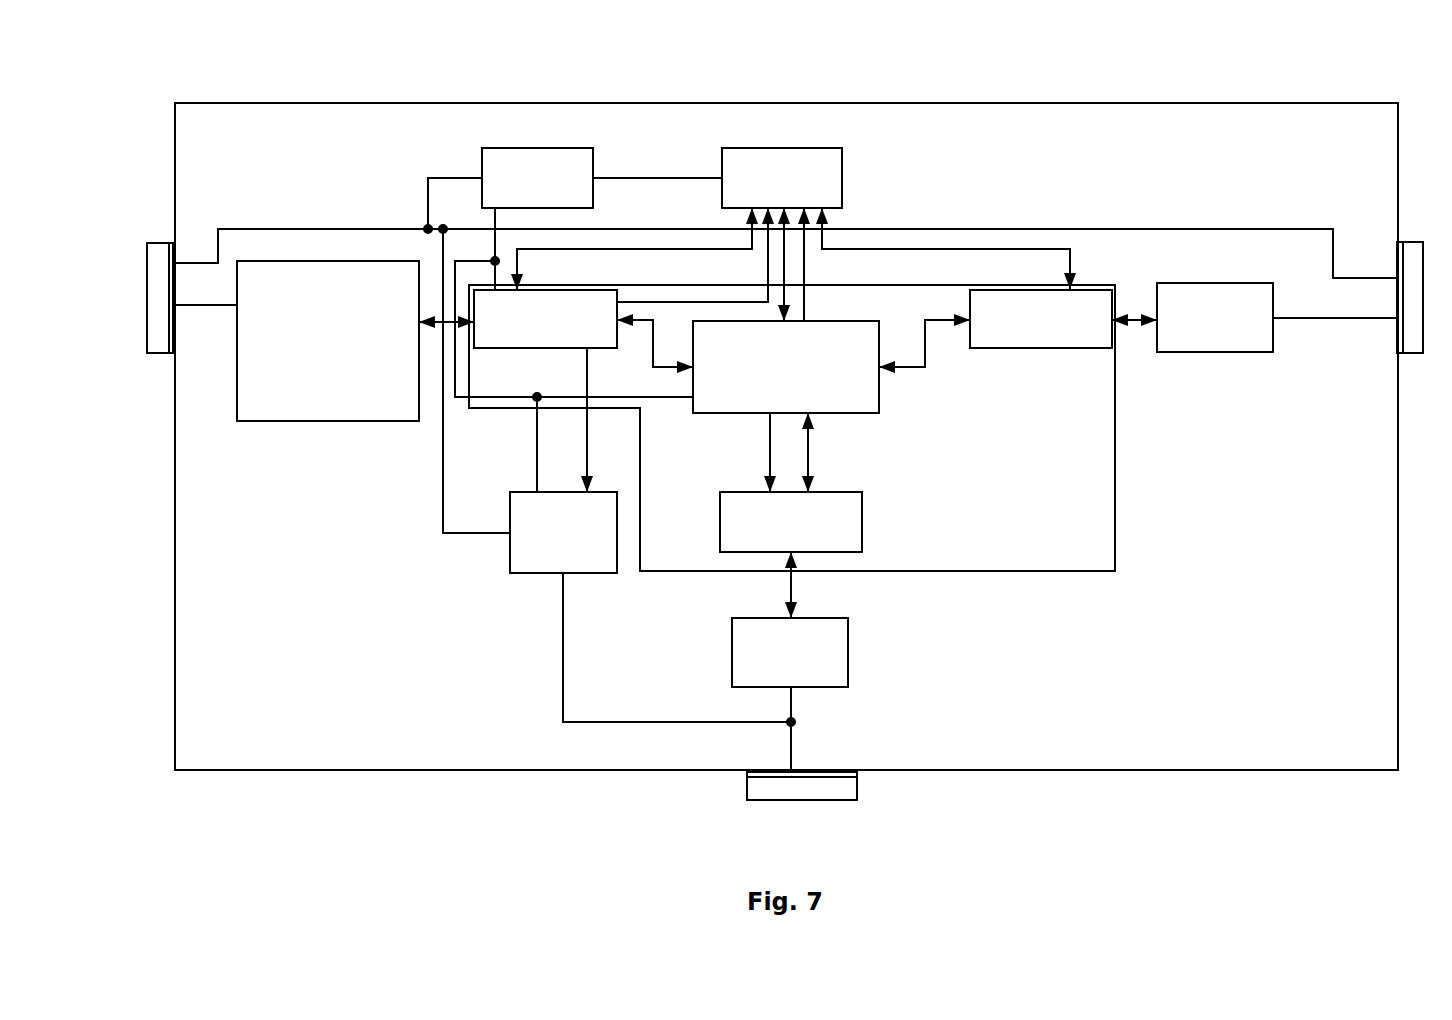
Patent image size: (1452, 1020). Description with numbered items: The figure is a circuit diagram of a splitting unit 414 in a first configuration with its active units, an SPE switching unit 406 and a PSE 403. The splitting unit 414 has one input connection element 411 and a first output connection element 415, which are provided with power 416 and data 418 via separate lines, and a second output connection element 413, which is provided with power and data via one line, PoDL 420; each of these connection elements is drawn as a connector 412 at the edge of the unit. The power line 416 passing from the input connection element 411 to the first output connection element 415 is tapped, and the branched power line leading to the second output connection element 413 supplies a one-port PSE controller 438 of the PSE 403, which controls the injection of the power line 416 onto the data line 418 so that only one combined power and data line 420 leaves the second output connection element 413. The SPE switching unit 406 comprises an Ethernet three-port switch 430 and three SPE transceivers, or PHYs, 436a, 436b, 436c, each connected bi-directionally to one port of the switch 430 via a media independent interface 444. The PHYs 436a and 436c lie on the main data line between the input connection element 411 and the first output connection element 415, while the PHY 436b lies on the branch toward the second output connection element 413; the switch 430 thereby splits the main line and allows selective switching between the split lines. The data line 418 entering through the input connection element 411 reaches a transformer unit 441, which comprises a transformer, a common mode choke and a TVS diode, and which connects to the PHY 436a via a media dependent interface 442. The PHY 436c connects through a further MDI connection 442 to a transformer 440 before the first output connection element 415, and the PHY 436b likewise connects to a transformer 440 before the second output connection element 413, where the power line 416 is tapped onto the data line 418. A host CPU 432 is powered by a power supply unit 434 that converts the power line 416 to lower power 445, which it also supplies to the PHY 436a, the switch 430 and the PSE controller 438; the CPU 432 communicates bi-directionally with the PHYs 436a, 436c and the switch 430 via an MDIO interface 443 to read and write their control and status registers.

The splitting unit 414 is at (176, 66).
The connector 412 is at (152, 243).
The input connection element 411 is at (155, 342).
The first output connection element 415 is at (1403, 343).
The second output connection element 413 is at (752, 778).
The power line 416 is at (333, 228).
The data line 418 is at (223, 307).
The PoDL line 420 is at (788, 753).
The transformer unit 441 is at (284, 410).
The power supply unit 434 is at (493, 168).
The host CPU 432 is at (832, 168).
The Ethernet 3-port switch 430 is at (878, 396).
The SPE transceiver 436a is at (573, 345).
The SPE transceiver 436b is at (850, 518).
The SPE transceiver 436c is at (1045, 338).
The transformer 440 is at (1242, 338).
The PSE 403 is at (589, 563).
The 1-port PSE controller 438 is at (600, 563).
The media dependent interface 442 is at (446, 326).
The MDIO interface 443 is at (905, 248).
The media independent interface 444 is at (667, 368).
The power 445 is at (663, 177).
The SPE switching unit 406 is at (1108, 574).